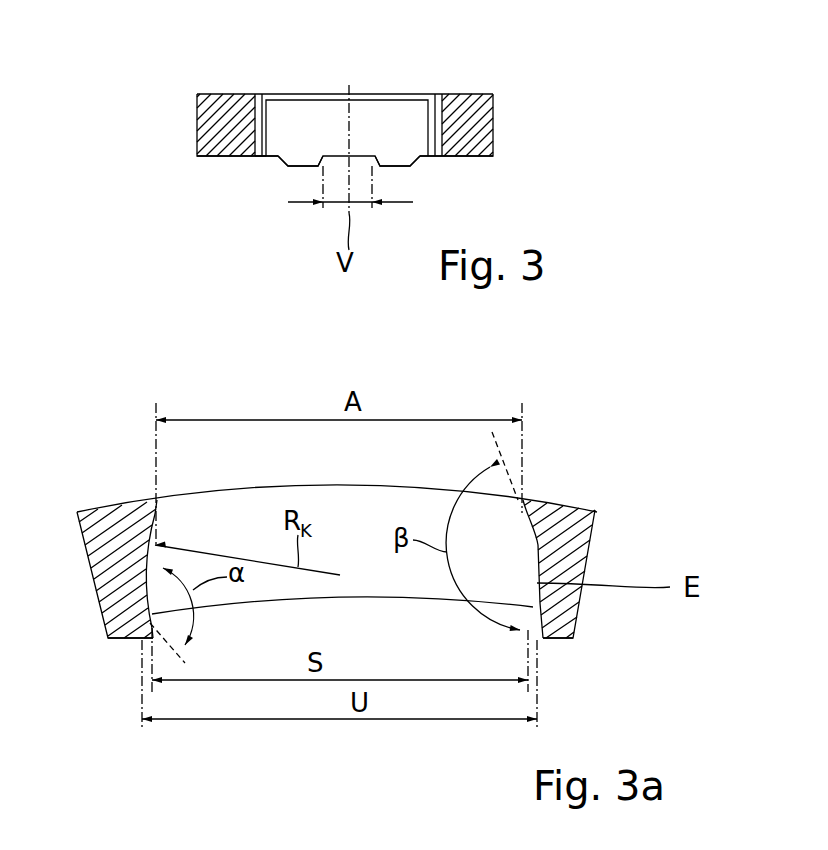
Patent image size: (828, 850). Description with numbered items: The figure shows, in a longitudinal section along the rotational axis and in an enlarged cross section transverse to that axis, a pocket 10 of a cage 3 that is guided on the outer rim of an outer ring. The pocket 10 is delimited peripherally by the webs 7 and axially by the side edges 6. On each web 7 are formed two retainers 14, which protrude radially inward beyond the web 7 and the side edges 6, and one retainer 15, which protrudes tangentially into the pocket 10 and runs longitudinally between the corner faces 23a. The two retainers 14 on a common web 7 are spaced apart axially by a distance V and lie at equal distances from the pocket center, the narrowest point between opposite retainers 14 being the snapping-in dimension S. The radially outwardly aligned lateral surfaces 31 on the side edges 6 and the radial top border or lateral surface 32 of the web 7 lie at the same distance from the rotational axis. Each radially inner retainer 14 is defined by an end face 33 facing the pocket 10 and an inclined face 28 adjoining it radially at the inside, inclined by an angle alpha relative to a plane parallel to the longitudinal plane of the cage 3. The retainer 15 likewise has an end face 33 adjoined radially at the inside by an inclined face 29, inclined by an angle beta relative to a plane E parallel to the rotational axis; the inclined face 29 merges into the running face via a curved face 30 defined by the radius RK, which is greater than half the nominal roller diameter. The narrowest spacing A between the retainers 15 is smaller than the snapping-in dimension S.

In FIG. 3, the cage 3 is at (513, 80).
In FIG. 3, the side edges 6 is at (227, 120).
In FIG. 3, the webs 7 is at (282, 93).
In FIG. 3A, the webs 7 is at (112, 572).
In FIG. 3, the pocket 10 is at (333, 115).
In FIG. 3, the retainers 14 is at (300, 150).
In FIG. 3A, the retainers 14 is at (148, 640).
In FIG. 3, the retainer 15 is at (387, 93).
In FIG. 3A, the retainer 15 is at (148, 500).
In FIG. 3, the corner faces 23a is at (261, 97).
In FIG. 3A, the inclined face 28 is at (148, 610).
In FIG. 3A, the inclined face 29 is at (160, 523).
In FIG. 3A, the curved face 30 is at (153, 546).
In FIG. 3, the lateral surfaces 31 is at (230, 157).
In FIG. 3, the lateral surface 32 is at (262, 157).
In FIG. 3A, the end face 33 is at (160, 497).